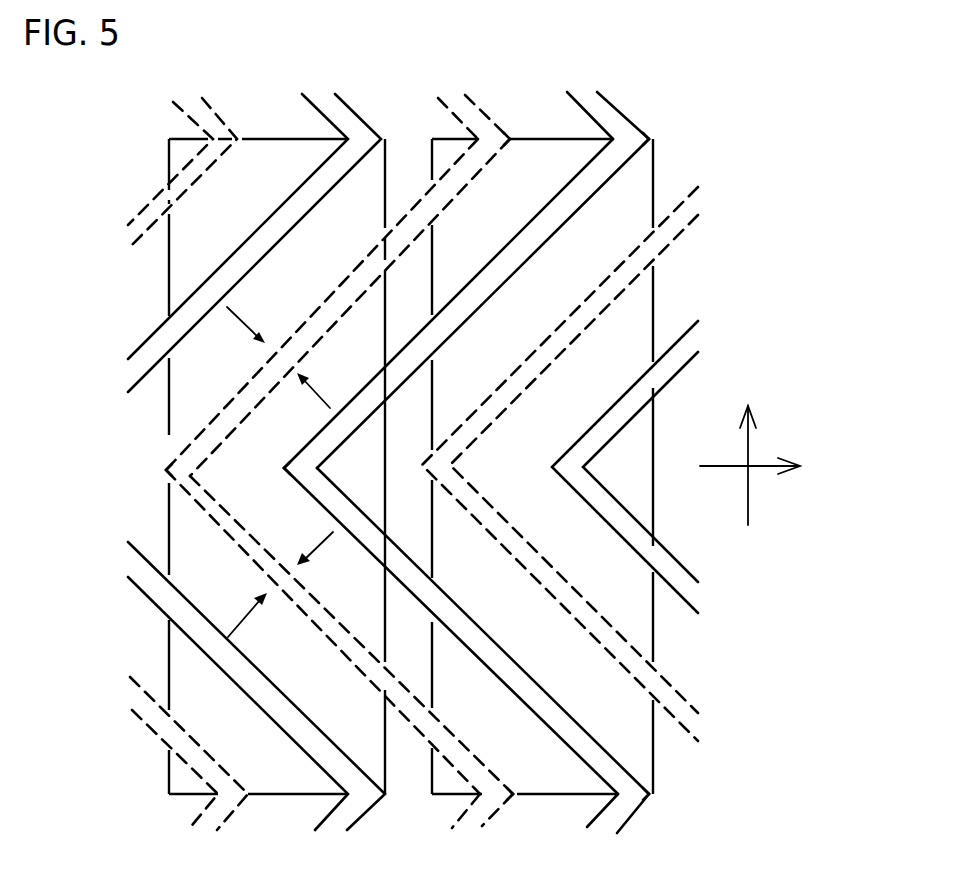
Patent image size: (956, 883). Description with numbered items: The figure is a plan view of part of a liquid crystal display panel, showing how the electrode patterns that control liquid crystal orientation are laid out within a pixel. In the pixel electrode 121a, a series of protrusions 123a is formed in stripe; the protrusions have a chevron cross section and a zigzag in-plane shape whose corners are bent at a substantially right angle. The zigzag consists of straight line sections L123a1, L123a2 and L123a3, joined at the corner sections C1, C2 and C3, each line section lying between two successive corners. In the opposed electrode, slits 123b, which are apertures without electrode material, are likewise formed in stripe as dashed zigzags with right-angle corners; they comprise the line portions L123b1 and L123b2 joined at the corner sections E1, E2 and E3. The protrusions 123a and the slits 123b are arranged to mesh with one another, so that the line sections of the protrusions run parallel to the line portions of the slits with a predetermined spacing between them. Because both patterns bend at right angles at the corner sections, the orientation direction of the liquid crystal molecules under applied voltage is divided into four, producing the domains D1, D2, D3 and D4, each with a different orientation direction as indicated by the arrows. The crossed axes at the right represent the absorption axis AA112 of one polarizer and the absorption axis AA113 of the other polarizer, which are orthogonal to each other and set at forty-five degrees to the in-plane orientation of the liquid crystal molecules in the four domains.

The pixel electrode 121a is at (185, 788).
The series of protrusions 123a is at (585, 92).
The line section L123a1 is at (480, 286).
The line section L123a2 is at (528, 692).
The line section L123a3 is at (621, 820).
The slits 123b is at (484, 822).
The line portion L123b1 is at (355, 267).
The line portion L123b2 is at (404, 693).
The corner section C1 is at (650, 137).
The corner section C2 is at (284, 469).
The corner section C3 is at (651, 793).
The corner section E1 is at (509, 139).
The corner section E2 is at (160, 467).
The corner section E3 is at (515, 796).
The domain D1 is at (324, 390).
The domain D2 is at (248, 320).
The domain D3 is at (325, 552).
The domain D4 is at (251, 621).
The absorption axis AA112 is at (748, 452).
The absorption axis AA113 is at (789, 465).